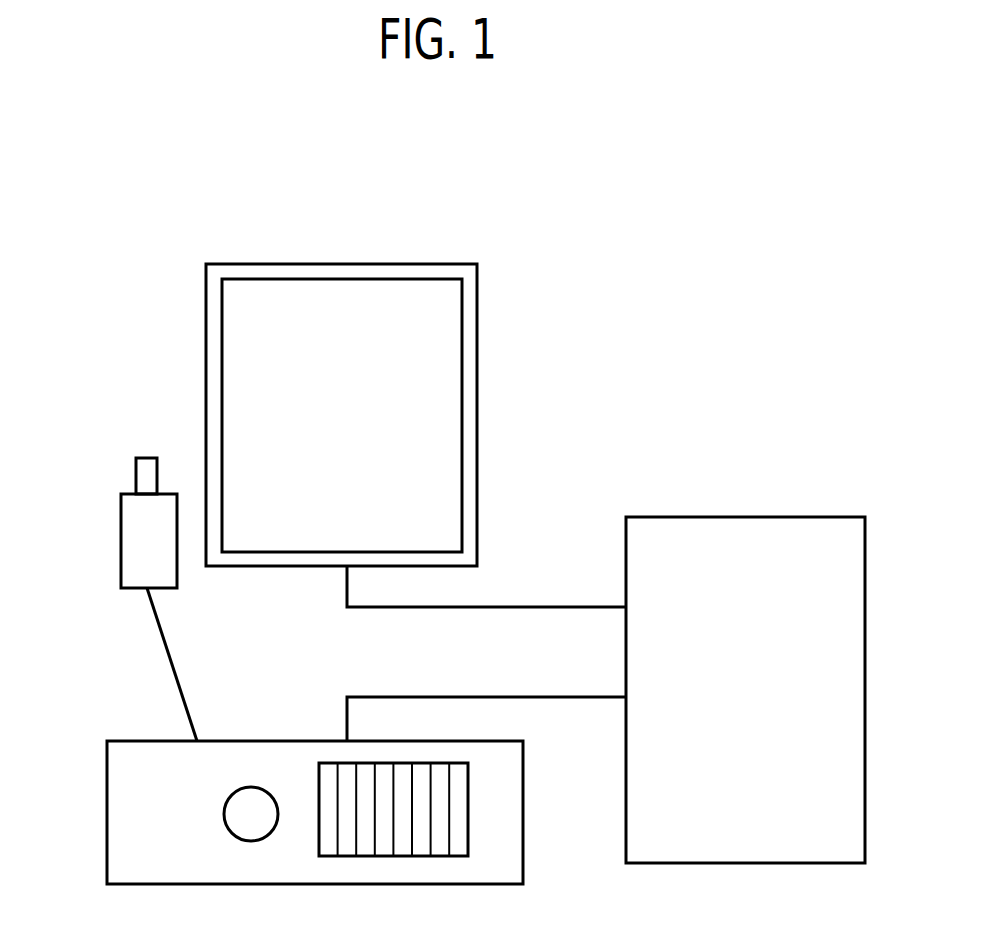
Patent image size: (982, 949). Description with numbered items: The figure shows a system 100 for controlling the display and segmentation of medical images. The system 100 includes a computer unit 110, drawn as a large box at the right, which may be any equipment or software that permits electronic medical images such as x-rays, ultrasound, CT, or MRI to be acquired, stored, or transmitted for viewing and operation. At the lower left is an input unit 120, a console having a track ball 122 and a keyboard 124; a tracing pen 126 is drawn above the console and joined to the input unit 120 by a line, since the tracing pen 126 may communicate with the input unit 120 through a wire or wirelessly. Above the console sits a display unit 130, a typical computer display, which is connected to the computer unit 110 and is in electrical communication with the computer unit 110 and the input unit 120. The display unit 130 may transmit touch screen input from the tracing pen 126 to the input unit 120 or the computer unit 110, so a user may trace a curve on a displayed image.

The system 100 is at (593, 202).
The computer unit 110 is at (626, 517).
The input unit 120 is at (107, 741).
The track ball 122 is at (252, 787).
The keyboard 124 is at (365, 856).
The tracing pen 126 is at (121, 522).
The display unit 130 is at (206, 373).